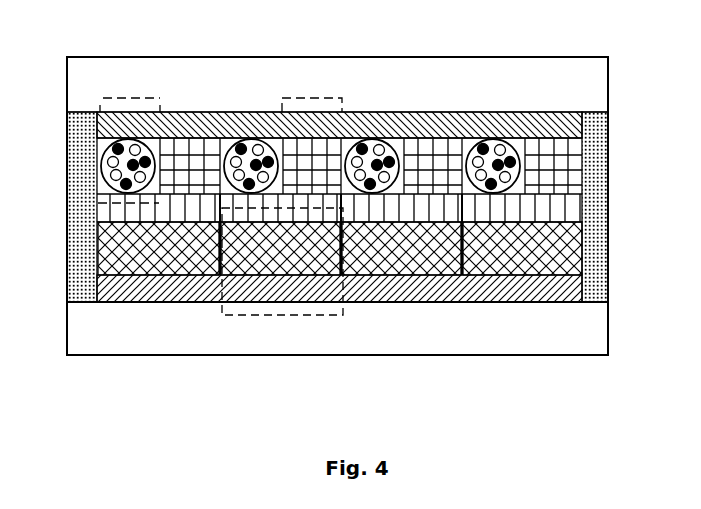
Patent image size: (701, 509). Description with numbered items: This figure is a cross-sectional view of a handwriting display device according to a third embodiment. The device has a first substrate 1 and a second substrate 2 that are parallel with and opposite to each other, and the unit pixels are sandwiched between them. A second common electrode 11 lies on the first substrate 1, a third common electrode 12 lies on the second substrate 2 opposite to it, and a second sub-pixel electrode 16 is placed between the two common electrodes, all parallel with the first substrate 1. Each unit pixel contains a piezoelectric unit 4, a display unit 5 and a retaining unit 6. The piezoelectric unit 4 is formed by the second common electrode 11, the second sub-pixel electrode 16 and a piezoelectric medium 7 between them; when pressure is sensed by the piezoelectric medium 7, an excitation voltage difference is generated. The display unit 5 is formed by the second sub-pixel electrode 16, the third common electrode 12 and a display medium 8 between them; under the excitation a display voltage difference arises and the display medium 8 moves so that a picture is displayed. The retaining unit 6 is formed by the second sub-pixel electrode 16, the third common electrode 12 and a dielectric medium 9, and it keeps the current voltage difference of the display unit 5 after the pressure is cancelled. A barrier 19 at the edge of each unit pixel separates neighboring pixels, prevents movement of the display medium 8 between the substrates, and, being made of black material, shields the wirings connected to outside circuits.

The first substrate 1 is at (520, 328).
The second substrate 2 is at (392, 78).
The piezoelectric unit 4 is at (315, 315).
The display unit 5 is at (117, 98).
The retaining unit 6 is at (300, 98).
The piezoelectric medium 7 is at (122, 265).
The display medium 8 is at (513, 147).
The dielectric medium 9 is at (190, 157).
The second common electrode 11 is at (193, 287).
The third common electrode 12 is at (452, 122).
The second sub-pixel electrode 16 is at (438, 300).
The barrier 19 is at (593, 300).